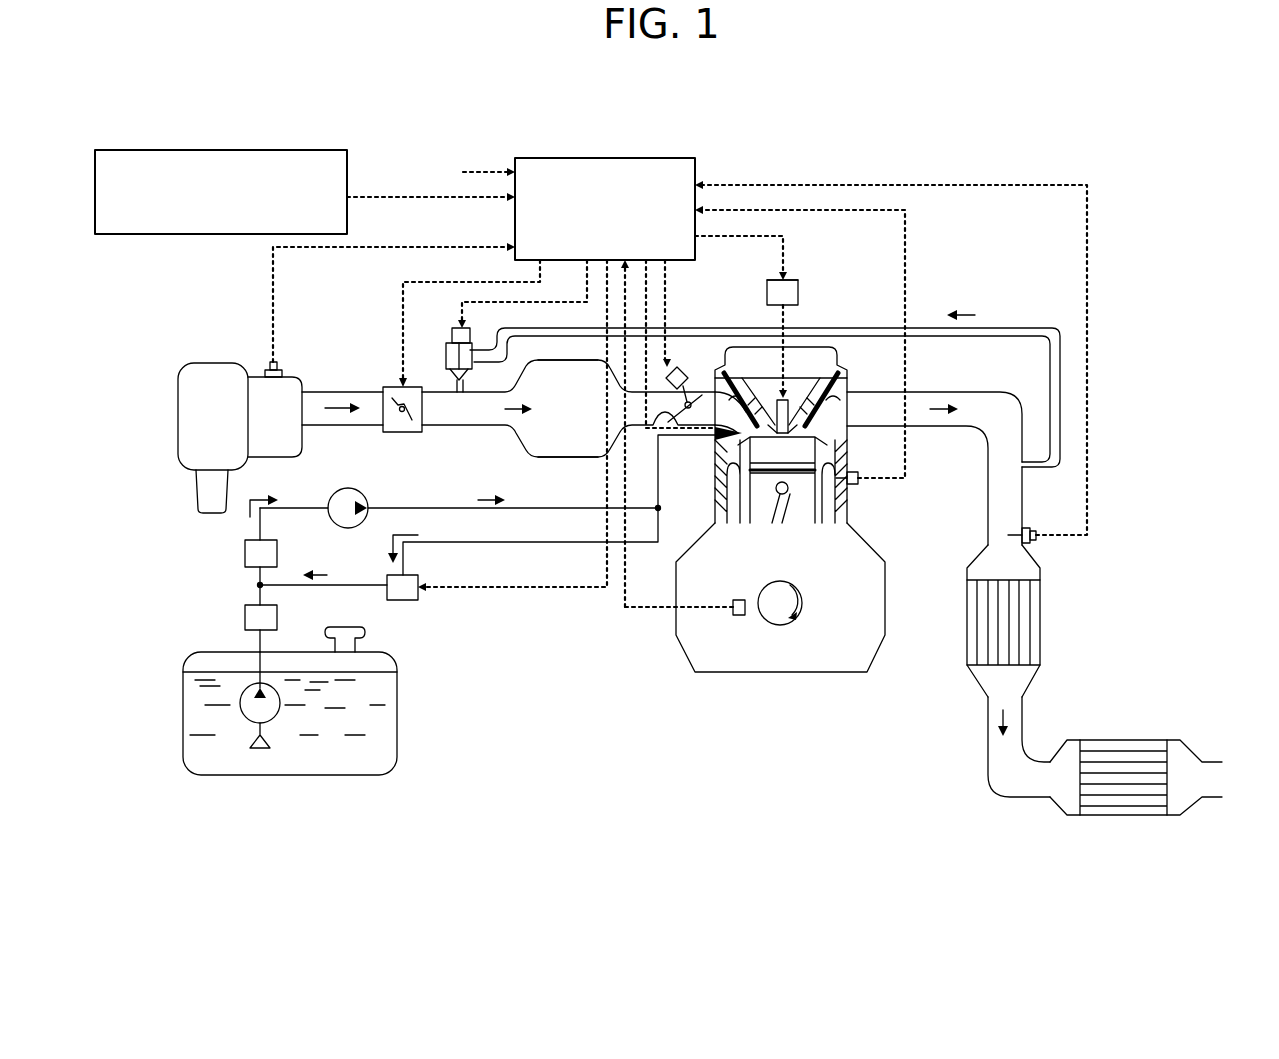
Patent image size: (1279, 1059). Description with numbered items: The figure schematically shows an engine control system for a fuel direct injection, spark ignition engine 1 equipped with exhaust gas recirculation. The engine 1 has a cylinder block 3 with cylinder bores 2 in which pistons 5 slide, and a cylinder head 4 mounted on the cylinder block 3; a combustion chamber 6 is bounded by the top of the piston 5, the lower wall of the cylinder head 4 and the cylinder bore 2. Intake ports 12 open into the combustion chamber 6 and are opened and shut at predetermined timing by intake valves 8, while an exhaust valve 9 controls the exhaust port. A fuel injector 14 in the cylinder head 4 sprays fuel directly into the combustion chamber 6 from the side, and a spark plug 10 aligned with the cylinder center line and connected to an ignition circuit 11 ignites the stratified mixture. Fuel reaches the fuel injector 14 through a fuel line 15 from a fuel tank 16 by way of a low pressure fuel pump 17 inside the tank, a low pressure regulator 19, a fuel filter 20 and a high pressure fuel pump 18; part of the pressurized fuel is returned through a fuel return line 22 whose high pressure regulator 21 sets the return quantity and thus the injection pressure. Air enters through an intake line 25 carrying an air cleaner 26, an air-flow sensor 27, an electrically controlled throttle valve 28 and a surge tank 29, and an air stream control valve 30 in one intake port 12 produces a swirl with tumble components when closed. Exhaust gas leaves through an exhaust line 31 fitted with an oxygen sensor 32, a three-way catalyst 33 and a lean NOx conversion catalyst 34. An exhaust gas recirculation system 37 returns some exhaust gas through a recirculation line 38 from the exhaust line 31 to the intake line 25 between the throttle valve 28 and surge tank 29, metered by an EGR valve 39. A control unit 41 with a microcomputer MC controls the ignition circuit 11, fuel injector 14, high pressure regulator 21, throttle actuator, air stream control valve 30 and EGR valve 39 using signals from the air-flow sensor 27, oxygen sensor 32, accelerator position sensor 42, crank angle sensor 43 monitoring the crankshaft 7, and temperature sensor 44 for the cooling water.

The engine 1 is at (668, 644).
The cylinder bore 2 is at (810, 520).
The cylinder block 3 is at (852, 517).
The cylinder head 4 is at (850, 384).
The piston 5 is at (762, 500).
The combustion chamber 6 is at (742, 505).
The crankshaft 7 is at (800, 618).
The intake valve 8 is at (740, 378).
The exhaust valve 9 is at (842, 372).
The spark plug 10 is at (786, 398).
The ignition circuit 11 is at (798, 282).
The intake port 12 is at (712, 403).
The fuel injector 14 is at (712, 448).
The fuel line 15 is at (520, 505).
The fuel tank 16 is at (397, 740).
The low pressure fuel pump 17 is at (240, 706).
The high pressure fuel pump 18 is at (348, 488).
The low pressure regulator 19 is at (245, 617).
The fuel filter 20 is at (245, 553).
The high pressure regulator 21 is at (405, 600).
The fuel return line 22 is at (568, 542).
The intake line 25 is at (490, 424).
The air cleaner 26 is at (215, 363).
The air-flow sensor 27 is at (282, 370).
The throttle valve 28 is at (390, 387).
The surge tank 29 is at (590, 457).
The air stream control valve 30 is at (668, 423).
The exhaust line 31 is at (943, 427).
The oxygen sensor 32 is at (1030, 545).
The three-way catalyst 33 is at (1040, 645).
The lean NOx conversion catalyst 34 is at (1122, 742).
The exhaust gas recirculation system 37 is at (825, 285).
The recirculation line 38 is at (993, 328).
The EGR valve 39 is at (452, 338).
The control unit 41 is at (600, 158).
The accelerator position sensor 42 is at (229, 150).
The crank angle sensor 43 is at (736, 615).
The temperature sensor 44 is at (857, 484).